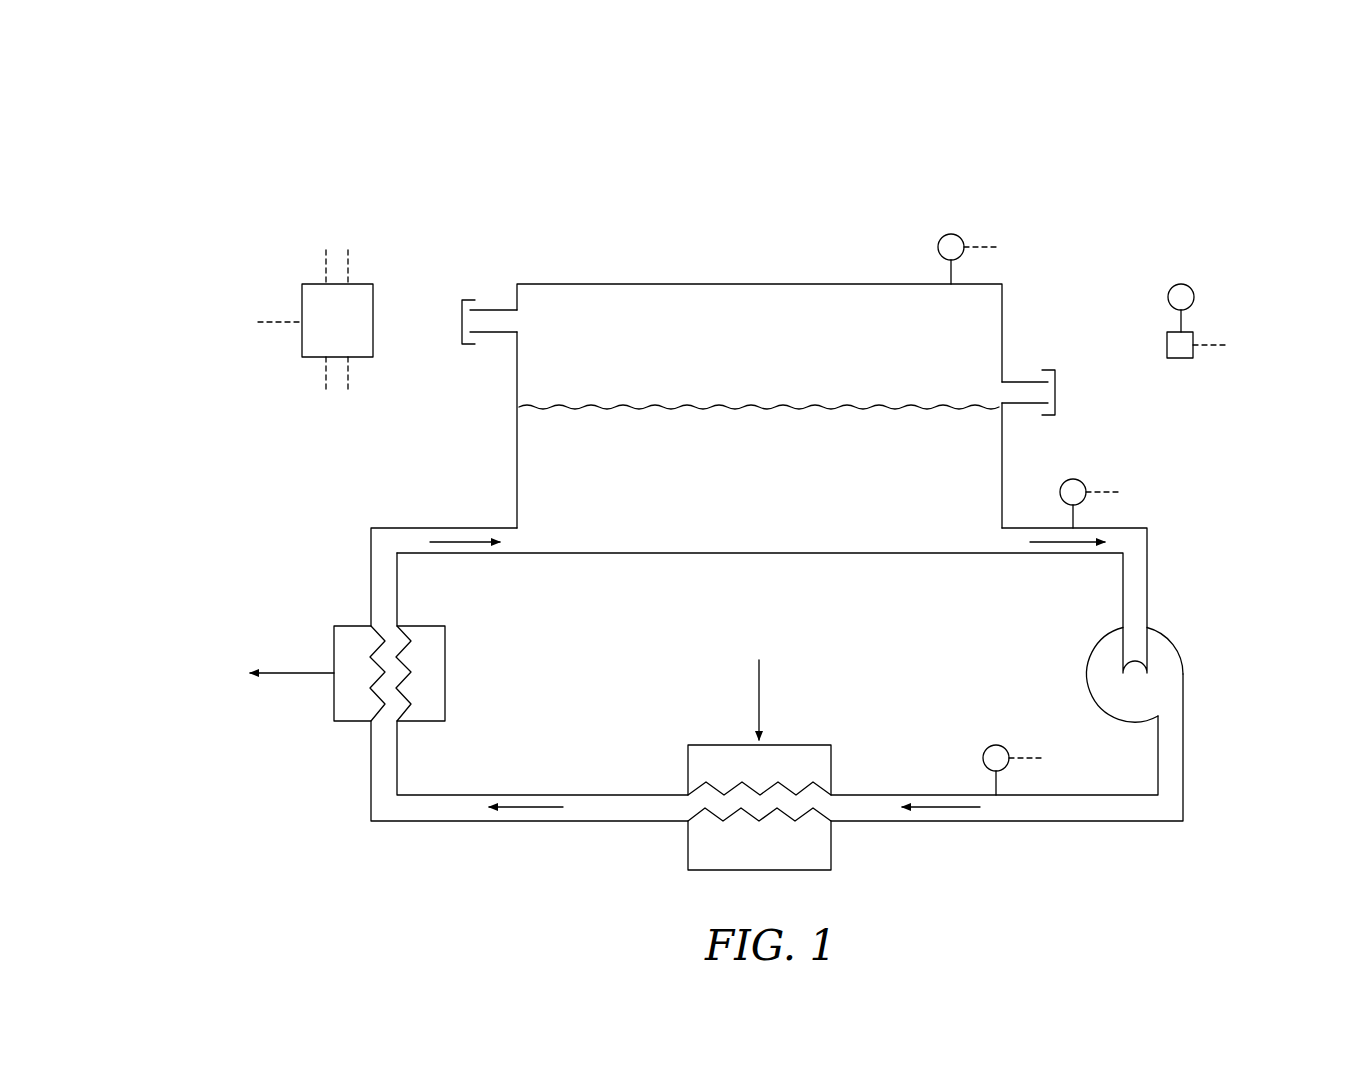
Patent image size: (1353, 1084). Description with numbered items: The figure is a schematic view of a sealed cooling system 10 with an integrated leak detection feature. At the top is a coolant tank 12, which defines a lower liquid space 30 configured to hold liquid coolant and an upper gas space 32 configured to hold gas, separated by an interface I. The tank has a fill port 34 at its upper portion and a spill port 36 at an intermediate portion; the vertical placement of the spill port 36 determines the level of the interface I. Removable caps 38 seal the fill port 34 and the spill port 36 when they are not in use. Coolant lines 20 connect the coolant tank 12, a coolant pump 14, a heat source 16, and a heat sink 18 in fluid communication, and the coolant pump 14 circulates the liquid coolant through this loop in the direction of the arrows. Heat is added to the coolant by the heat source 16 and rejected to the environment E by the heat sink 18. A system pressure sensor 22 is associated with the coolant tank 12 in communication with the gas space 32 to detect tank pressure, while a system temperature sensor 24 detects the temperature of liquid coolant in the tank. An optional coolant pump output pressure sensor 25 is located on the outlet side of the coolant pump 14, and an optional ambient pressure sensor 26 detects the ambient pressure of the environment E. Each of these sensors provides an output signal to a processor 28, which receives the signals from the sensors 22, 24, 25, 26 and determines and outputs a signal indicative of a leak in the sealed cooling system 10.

The sealed cooling system 10 is at (195, 158).
The coolant tank 12 is at (768, 283).
The coolant pump 14 is at (1170, 668).
The heat source 16 is at (820, 848).
The heat sink 18 is at (430, 670).
The coolant lines 20 is at (447, 528).
The system pressure sensor 22 is at (953, 246).
The system temperature sensor 24 is at (1073, 490).
The coolant pump output pressure sensor 25 is at (993, 756).
The ambient pressure sensor 26 is at (1181, 295).
The processor 28 is at (312, 334).
The liquid space 30 is at (769, 466).
The gas space 32 is at (769, 343).
The fill port 34 is at (490, 306).
The spill port 36 is at (1015, 382).
The removable caps 38 is at (456, 300).
The interface I is at (856, 405).
The environment E is at (1253, 133).